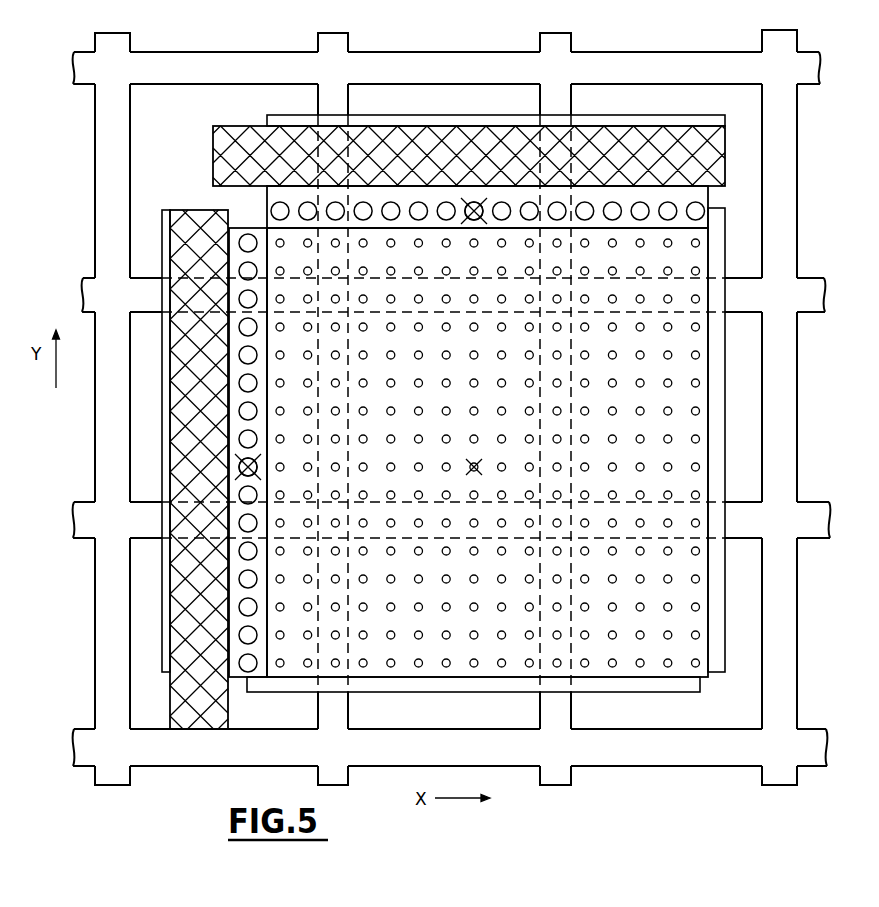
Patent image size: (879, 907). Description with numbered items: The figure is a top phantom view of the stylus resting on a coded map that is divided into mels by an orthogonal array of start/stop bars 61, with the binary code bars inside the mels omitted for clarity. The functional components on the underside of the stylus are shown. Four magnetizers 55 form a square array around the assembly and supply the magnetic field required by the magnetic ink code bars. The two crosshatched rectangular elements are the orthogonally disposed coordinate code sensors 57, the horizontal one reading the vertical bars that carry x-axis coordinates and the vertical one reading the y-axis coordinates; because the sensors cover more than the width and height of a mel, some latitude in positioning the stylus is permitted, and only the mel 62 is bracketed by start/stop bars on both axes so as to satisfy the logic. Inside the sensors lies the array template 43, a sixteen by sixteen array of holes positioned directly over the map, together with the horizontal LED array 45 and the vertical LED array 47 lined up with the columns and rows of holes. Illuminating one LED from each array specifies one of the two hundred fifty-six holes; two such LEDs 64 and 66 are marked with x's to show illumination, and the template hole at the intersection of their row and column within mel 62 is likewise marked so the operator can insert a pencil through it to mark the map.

The array template 43 is at (702, 673).
The horizontal LED array 45 is at (705, 215).
The vertical LED array 47 is at (253, 667).
The magnetizers 55 is at (728, 207).
The coordinate code sensors 57 is at (185, 210).
The start/stop bars 61 is at (106, 560).
The mel 62 is at (445, 401).
The illuminated LED 64 is at (240, 465).
The illuminated LED 66 is at (477, 206).